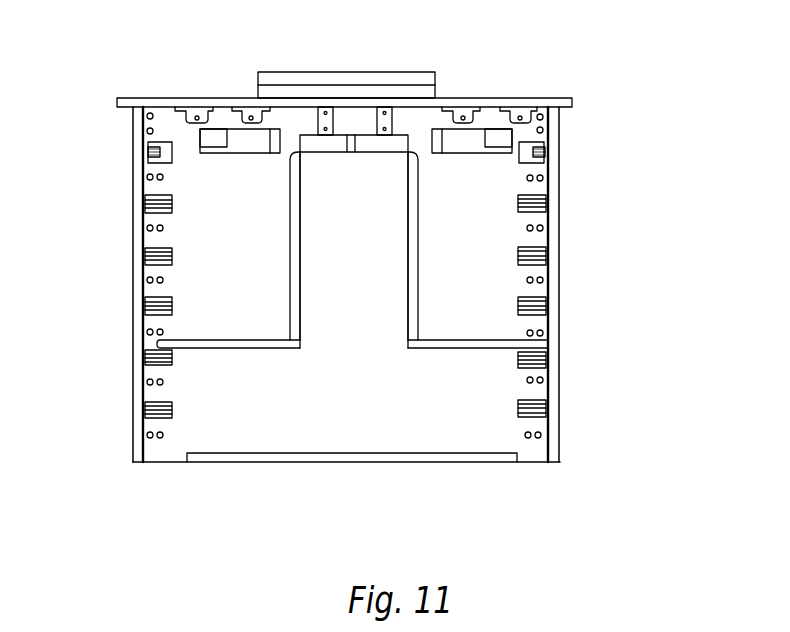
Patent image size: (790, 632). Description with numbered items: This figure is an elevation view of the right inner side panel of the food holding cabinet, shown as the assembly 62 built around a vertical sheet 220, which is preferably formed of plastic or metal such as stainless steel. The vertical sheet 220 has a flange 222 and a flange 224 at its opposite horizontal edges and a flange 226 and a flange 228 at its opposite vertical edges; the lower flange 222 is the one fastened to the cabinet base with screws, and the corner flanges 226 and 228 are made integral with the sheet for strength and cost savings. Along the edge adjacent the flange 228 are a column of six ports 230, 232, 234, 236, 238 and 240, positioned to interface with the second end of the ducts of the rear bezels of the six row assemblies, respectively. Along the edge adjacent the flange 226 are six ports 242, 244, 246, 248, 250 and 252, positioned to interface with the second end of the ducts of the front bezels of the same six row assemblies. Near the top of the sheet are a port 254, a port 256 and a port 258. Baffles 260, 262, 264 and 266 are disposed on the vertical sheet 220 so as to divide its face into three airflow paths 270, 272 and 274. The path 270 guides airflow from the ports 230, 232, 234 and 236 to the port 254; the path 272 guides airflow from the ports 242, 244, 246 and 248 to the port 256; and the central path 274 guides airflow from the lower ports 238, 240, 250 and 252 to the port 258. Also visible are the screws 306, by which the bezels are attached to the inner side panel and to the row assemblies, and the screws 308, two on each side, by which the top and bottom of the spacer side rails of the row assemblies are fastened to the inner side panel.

The electrical enclosure assembly 62 is at (586, 62).
The vertical sheet 220 is at (507, 440).
The flange 222 is at (285, 463).
The flange 224 is at (227, 98).
The flange 226 is at (560, 398).
The flange 228 is at (130, 377).
The port 230 is at (143, 155).
The port 232 is at (143, 208).
The port 234 is at (143, 261).
The port 236 is at (143, 311).
The port 238 is at (132, 350).
The port 240 is at (143, 413).
The port 242 is at (545, 152).
The port 244 is at (553, 202).
The port 246 is at (560, 254).
The port 248 is at (553, 303).
The port 250 is at (555, 357).
The port 252 is at (543, 408).
The port 254 is at (222, 128).
The port 256 is at (480, 128).
The port 258 is at (382, 150).
The baffle 260 is at (227, 350).
The baffle 262 is at (490, 350).
The baffle 264 is at (288, 317).
The baffle 266 is at (418, 318).
The path 270 is at (249, 229).
The path 272 is at (486, 229).
The path 274 is at (374, 310).
The screws 306 is at (147, 435).
The screws 308 is at (165, 442).